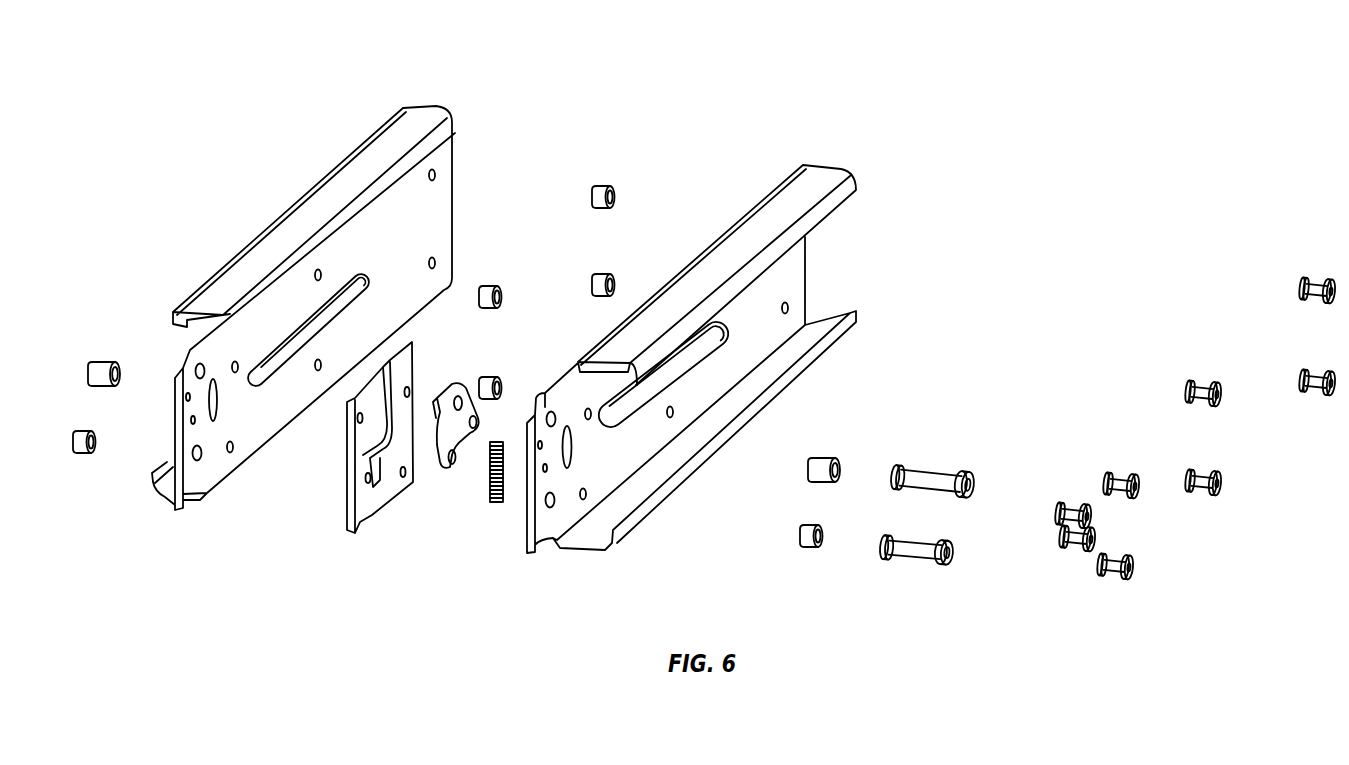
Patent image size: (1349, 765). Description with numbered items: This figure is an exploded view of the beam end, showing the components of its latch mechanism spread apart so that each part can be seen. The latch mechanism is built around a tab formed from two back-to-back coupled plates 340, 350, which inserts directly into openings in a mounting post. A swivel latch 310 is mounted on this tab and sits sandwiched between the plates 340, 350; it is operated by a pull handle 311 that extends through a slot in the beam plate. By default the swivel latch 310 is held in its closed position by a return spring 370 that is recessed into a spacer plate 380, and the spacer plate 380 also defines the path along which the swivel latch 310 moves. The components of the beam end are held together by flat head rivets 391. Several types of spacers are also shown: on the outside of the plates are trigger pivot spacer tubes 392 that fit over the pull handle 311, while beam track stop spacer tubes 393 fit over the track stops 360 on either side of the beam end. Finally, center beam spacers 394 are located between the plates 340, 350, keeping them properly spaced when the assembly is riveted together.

The swivel latch 310 is at (447, 470).
The pull handle 311 is at (967, 468).
The plate 340 is at (430, 109).
The plate 350 is at (824, 167).
The track stop 360 is at (905, 565).
The return spring 370 is at (495, 505).
The spacer plate 380 is at (355, 535).
The flat head rivets 391 is at (1297, 380).
The trigger pivot spacer tubes 392 is at (105, 357).
The beam track stop spacer tubes 393 is at (84, 456).
The center beam spacers 394 is at (592, 287).